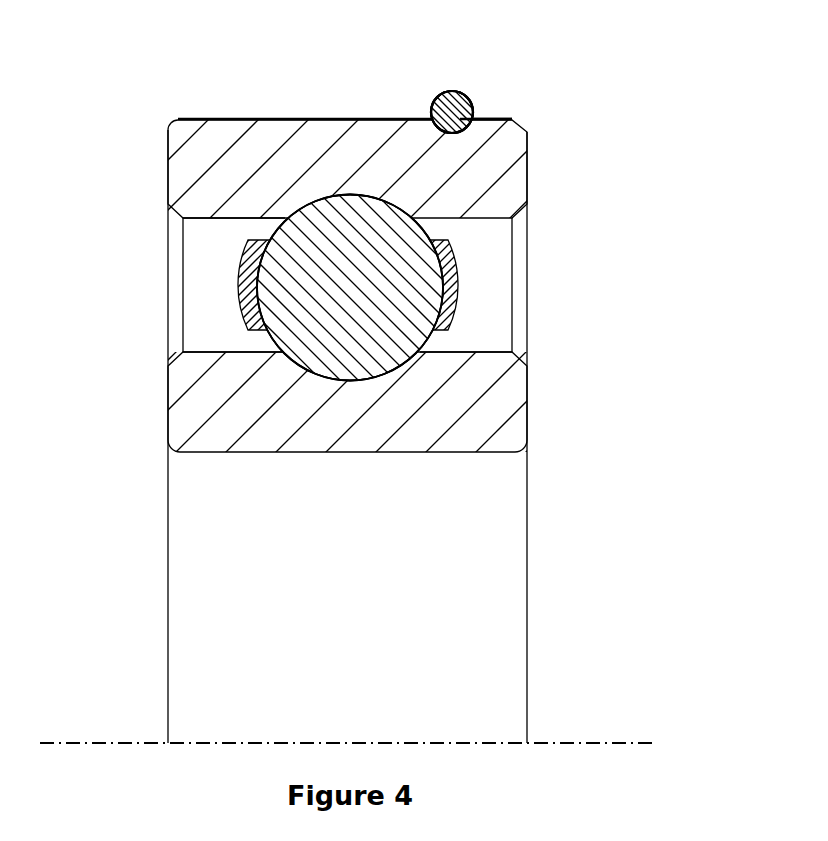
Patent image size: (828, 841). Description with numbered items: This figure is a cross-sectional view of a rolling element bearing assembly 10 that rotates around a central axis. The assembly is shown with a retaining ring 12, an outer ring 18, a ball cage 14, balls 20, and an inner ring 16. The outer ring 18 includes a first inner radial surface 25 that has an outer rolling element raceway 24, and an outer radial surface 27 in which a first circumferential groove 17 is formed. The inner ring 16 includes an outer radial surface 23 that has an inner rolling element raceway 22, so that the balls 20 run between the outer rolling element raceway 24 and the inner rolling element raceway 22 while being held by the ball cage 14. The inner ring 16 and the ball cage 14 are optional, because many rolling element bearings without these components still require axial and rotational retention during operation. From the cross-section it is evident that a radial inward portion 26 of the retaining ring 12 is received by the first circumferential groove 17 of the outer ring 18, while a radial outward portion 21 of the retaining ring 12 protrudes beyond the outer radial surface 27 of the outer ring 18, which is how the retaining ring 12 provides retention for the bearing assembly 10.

The rolling element bearing assembly 10 is at (583, 73).
The retaining ring 12 is at (431, 91).
The ball cage 14 is at (243, 300).
The inner ring 16 is at (183, 398).
The first circumferential groove 17 is at (445, 135).
The outer ring 18 is at (183, 163).
The balls 20 is at (400, 337).
The radial outward portion 21 is at (451, 100).
The inner rolling element raceway 22 is at (373, 377).
The outer radial surface 23 is at (223, 352).
The outer rolling element raceway 24 is at (300, 207).
The first inner radial surface 25 is at (240, 218).
The radial inward portion 26 is at (453, 123).
The outer radial surface 27 is at (292, 118).